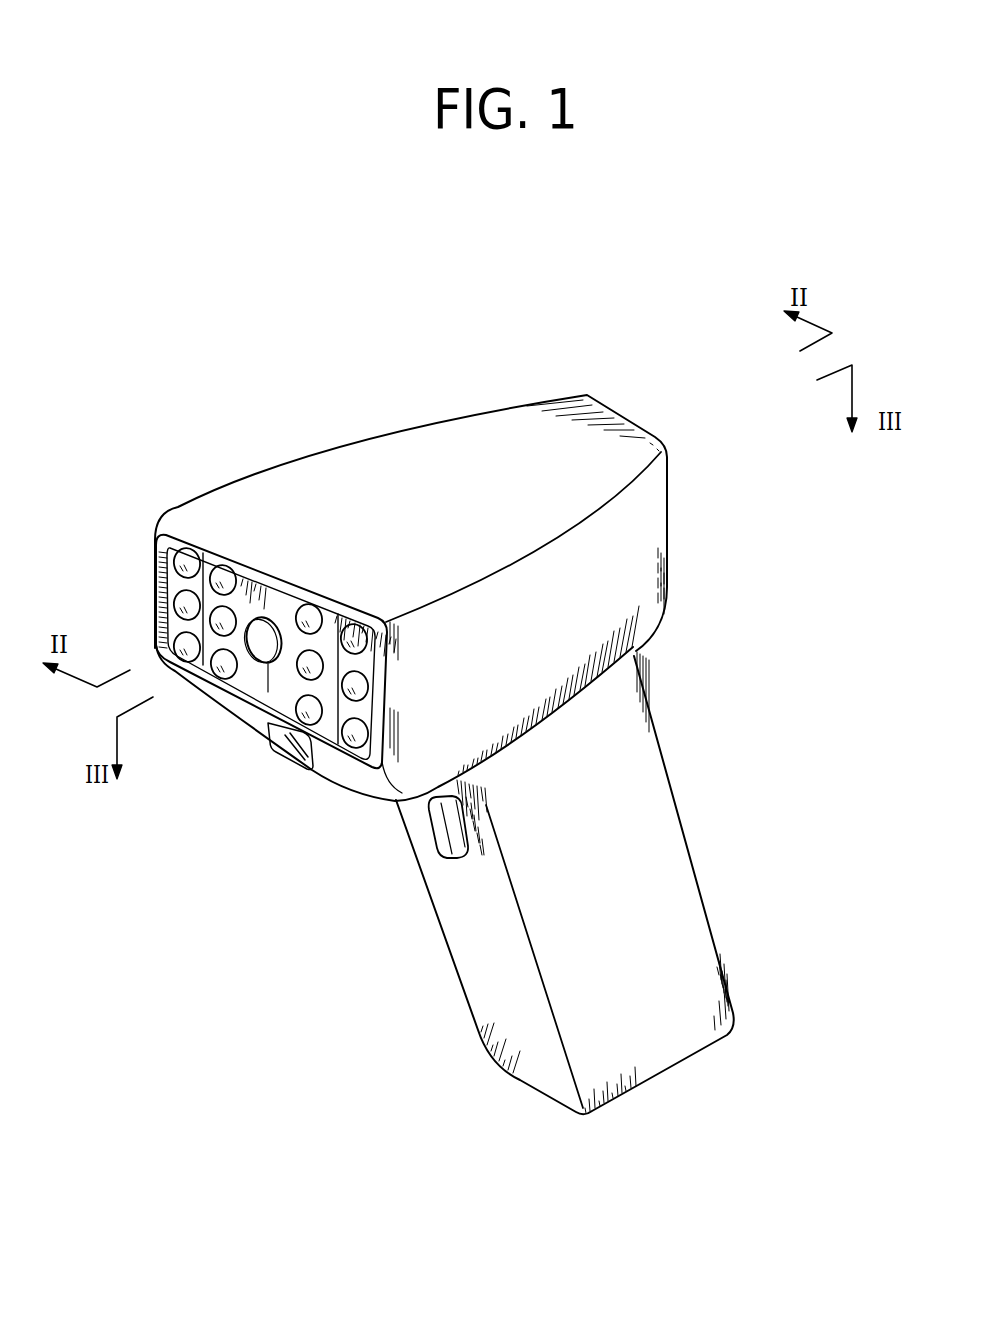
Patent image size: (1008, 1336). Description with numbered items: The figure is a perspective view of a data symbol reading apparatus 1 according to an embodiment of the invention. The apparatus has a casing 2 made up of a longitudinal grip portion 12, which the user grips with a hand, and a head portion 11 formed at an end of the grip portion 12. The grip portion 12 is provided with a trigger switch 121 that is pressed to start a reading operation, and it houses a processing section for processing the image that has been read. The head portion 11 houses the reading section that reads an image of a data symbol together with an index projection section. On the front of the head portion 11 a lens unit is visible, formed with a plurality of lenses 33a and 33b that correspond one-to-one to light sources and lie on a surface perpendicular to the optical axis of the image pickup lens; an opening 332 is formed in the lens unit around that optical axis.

The data symbol reading apparatus 1 is at (462, 394).
The casing 2 is at (321, 462).
The head portion 11 is at (772, 384).
The grip portion 12 is at (770, 650).
The trigger switch 121 is at (432, 833).
The lens 33a is at (224, 607).
The lens 33b is at (180, 553).
The opening 332 is at (270, 628).